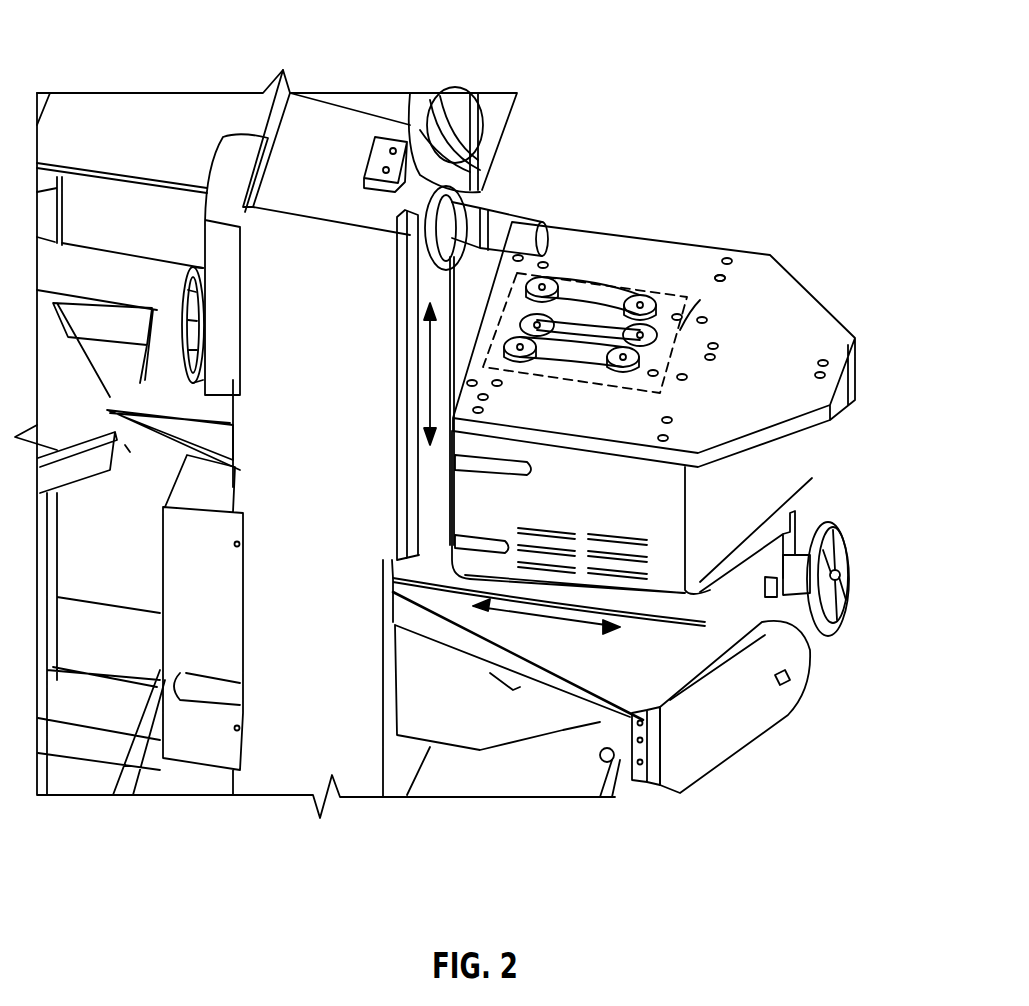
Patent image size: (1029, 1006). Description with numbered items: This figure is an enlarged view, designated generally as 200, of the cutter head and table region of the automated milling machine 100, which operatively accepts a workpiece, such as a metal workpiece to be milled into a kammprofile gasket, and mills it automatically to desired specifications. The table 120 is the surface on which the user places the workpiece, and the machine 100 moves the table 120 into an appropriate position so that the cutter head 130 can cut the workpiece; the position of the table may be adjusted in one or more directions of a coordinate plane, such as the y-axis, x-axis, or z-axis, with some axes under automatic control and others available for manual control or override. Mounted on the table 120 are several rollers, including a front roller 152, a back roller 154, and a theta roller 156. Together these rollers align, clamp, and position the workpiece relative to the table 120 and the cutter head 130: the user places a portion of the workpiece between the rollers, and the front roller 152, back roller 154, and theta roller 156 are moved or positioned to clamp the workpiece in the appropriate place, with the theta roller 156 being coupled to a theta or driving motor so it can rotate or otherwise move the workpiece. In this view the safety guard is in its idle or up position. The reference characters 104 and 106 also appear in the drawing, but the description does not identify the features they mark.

The band saw machine with attached fixture 200 is at (463, 414).
The automated milling machine 100 is at (733, 728).
The base slide rail 104 is at (540, 617).
The vertical column 106 is at (430, 387).
The table 120 is at (823, 328).
The cutter head 130 is at (520, 228).
The front roller 152 is at (645, 295).
The back roller 154 is at (630, 367).
The theta roller 156 is at (700, 300).